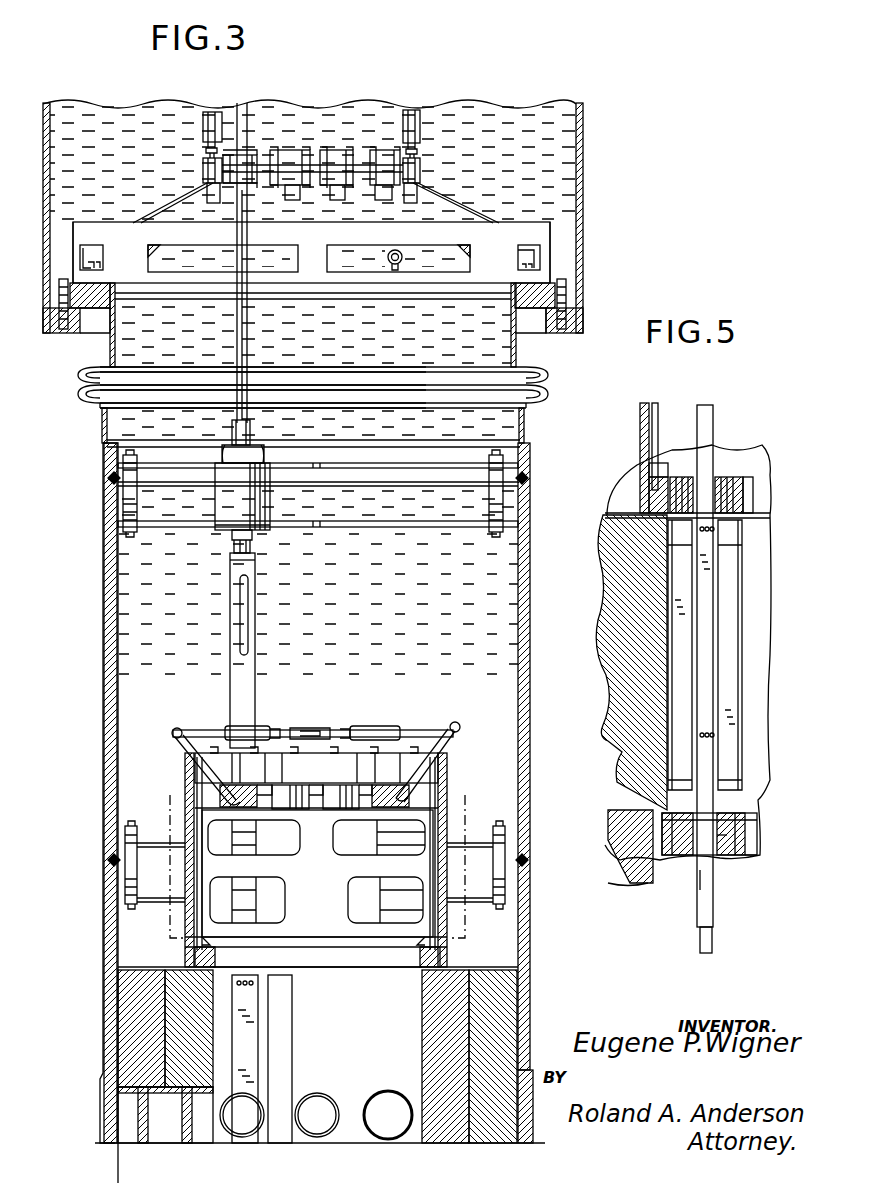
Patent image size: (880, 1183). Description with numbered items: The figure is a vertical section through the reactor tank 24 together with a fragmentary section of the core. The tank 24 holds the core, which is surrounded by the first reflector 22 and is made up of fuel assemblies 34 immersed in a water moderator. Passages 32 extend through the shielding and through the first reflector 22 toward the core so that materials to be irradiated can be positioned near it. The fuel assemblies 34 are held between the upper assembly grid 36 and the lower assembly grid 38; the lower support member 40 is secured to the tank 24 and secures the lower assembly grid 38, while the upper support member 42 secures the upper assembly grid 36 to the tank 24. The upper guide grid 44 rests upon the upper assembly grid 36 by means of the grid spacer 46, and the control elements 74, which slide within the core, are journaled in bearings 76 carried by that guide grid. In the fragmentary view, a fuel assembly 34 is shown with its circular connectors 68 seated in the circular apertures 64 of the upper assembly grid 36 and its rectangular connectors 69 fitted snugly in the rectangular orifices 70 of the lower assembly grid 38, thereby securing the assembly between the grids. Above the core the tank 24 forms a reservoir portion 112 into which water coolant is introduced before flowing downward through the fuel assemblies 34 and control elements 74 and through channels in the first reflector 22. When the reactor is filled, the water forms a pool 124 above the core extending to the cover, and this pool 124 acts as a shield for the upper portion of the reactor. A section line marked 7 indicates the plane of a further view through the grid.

In FIG. 3, the pool 124 is at (541, 150).
In FIG. 3, the tank 24 is at (521, 757).
In FIG. 3, the reservoir portion 112 is at (350, 668).
In FIG. 3, the upper guide grid 44 is at (305, 768).
In FIG. 3, the bearings 76 is at (340, 794).
In FIG. 3, the upper support member 42 is at (443, 778).
In FIG. 5, the upper support member 42 is at (640, 444).
In FIG. 3, the grid spacer 46 is at (328, 893).
In FIG. 3, the section line 7- 7 is at (170, 795).
In FIG. 3, the first reflector 22 is at (481, 1011).
In FIG. 5, the first reflector 22 is at (620, 585).
In FIG. 3, the upper assembly grid 36 is at (374, 970).
In FIG. 5, the upper assembly grid 36 is at (738, 485).
In FIG. 3, the control elements 74 is at (251, 1034).
In FIG. 5, the control elements 74 is at (705, 890).
In FIG. 3, the passages 32 is at (338, 1068).
In FIG. 5, the circular connectors 68 is at (678, 480).
In FIG. 5, the circular apertures 64 is at (649, 490).
In FIG. 5, the fuel assemblies 34 is at (738, 568).
In FIG. 5, the rectangular connectors 69 is at (738, 843).
In FIG. 5, the lower assembly grid 38 is at (758, 847).
In FIG. 5, the rectangular orifices 70 is at (722, 845).
In FIG. 5, the lower support member 40 is at (637, 850).